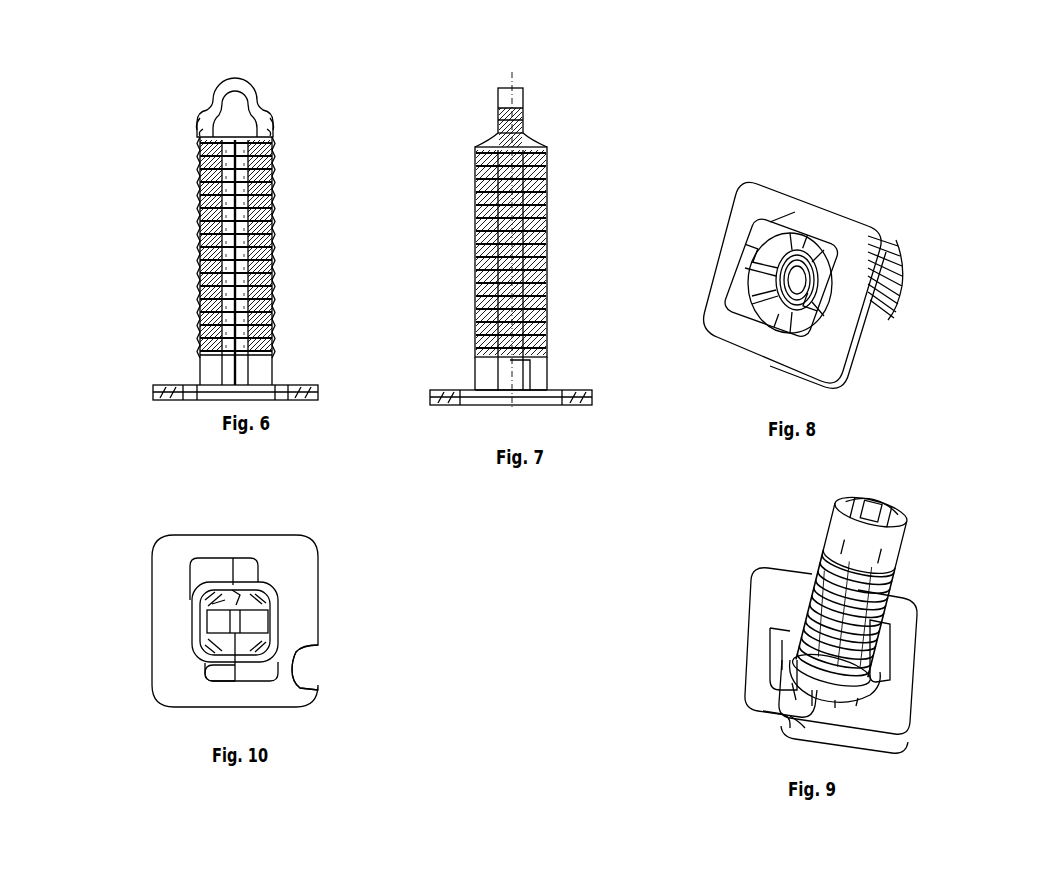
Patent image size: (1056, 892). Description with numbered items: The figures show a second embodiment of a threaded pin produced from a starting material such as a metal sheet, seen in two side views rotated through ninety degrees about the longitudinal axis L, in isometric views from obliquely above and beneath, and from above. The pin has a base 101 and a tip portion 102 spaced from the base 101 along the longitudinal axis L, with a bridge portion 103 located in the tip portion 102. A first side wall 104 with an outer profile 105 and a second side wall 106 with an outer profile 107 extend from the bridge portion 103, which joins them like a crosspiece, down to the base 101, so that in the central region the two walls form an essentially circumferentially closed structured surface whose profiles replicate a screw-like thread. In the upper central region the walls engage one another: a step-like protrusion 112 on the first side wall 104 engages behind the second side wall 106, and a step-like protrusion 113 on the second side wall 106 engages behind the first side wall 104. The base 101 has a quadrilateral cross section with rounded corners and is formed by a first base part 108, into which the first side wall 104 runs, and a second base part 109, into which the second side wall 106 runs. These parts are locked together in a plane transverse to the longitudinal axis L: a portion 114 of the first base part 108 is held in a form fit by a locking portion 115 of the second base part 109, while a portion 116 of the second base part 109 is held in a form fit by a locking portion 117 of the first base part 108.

In FIG. 6, the base 101 is at (118, 360).
In FIG. 6, the tip portion 102 is at (180, 80).
In FIG. 6, the bridge portion 103 is at (235, 78).
In FIG. 7, the bridge portion 103 is at (524, 90).
In FIG. 9, the bridge portion 103 is at (876, 500).
In FIG. 6, the first side wall 104 is at (198, 240).
In FIG. 10, the first side wall 104 is at (215, 568).
In FIG. 9, the first side wall 104 is at (858, 500).
In FIG. 6, the outer profile 105 is at (184, 285).
In FIG. 6, the second side wall 106 is at (275, 250).
In FIG. 10, the second side wall 106 is at (265, 585).
In FIG. 9, the second side wall 106 is at (830, 540).
In FIG. 6, the outer profile 107 is at (289, 300).
In FIG. 8, the first base part 108 is at (722, 265).
In FIG. 10, the first base part 108 is at (160, 632).
In FIG. 9, the first base part 108 is at (773, 590).
In FIG. 8, the second base part 109 is at (838, 355).
In FIG. 10, the second base part 109 is at (300, 585).
In FIG. 9, the second base part 109 is at (890, 722).
In FIG. 10, the step-like protrusion 112 is at (238, 640).
In FIG. 9, the step-like protrusion 112 is at (846, 530).
In FIG. 10, the step-like protrusion 113 is at (238, 595).
In FIG. 9, the step-like protrusion 113 is at (906, 535).
In FIG. 9, the portion of the first base part 114 is at (882, 642).
In FIG. 10, the locking portion 115 is at (162, 590).
In FIG. 10, the portion of the second base part 116 is at (265, 672).
In FIG. 9, the portion of the second base part 116 is at (782, 660).
In FIG. 10, the locking portion 117 is at (312, 652).
In FIG. 9, the locking portion 117 is at (780, 712).
In FIG. 7, the longitudinal axis L is at (512, 405).